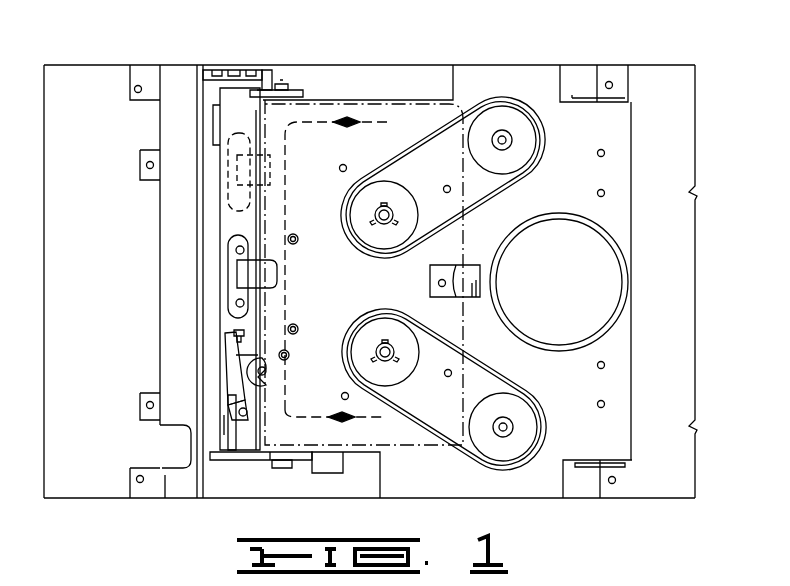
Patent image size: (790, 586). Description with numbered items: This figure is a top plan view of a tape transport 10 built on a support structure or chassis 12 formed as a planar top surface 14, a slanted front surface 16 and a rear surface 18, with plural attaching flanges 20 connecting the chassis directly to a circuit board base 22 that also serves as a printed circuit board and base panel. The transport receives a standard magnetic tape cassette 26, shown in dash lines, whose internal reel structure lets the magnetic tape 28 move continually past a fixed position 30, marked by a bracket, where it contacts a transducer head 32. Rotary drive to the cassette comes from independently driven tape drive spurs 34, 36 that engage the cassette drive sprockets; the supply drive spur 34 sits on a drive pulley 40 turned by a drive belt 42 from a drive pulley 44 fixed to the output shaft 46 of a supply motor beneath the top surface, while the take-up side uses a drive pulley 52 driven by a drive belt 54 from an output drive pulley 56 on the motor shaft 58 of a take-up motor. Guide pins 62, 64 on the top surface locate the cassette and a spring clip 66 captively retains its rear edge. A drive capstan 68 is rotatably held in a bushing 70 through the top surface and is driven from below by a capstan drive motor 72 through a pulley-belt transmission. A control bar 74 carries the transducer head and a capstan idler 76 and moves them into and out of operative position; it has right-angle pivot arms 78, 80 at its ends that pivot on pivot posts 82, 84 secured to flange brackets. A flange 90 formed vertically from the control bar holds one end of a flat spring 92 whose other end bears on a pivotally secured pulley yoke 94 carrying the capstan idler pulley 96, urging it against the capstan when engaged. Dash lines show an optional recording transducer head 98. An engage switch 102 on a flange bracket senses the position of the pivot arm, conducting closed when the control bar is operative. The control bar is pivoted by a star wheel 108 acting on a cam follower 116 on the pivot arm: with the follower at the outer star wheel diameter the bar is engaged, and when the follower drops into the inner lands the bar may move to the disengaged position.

The tape transport 10 is at (393, 52).
The chassis 12 is at (479, 64).
The planar top surface 14 is at (573, 199).
The slanted front surface 16 is at (172, 70).
The rear surface 18 is at (632, 131).
The attaching flanges 20 is at (136, 68).
The circuit board base 22 is at (106, 241).
The tape cassette 26 is at (470, 341).
The magnetic tape 28 is at (278, 188).
The fixed position 30 is at (286, 255).
The transducer head 32 is at (269, 284).
The tape supply drive spur 34 is at (390, 208).
The tape drive spur 36 is at (392, 345).
The drive pulley 40 is at (384, 248).
The drive belt 42 is at (492, 186).
The drive pulley 44 is at (530, 150).
The output shaft 46 is at (512, 138).
The drive pulley 52 is at (402, 366).
The drive belt 54 is at (428, 426).
The output drive pulley 56 is at (530, 414).
The motor shaft 58 is at (508, 422).
The guide pin 62 is at (298, 238).
The guide pin 64 is at (298, 325).
The spring clip 66 is at (468, 268).
The drive capstan 68 is at (290, 355).
The bushing 70 is at (288, 360).
The capstan drive motor 72 is at (570, 281).
The control bar 74 is at (214, 106).
The capstan idler 76 is at (242, 364).
The pivot arm 78 is at (290, 82).
The pivot arm 80 is at (260, 460).
The pivot post 82 is at (286, 88).
The pivot post 84 is at (284, 468).
The flange 90 is at (224, 422).
The flat spring 92 is at (230, 394).
The pulley yoke 94 is at (232, 344).
The capstan idler pulley 96 is at (280, 382).
The recording transducer head 98 is at (230, 178).
The engage switch 102 is at (326, 463).
The star wheel 108 is at (214, 68).
The cam follower 116 is at (266, 68).